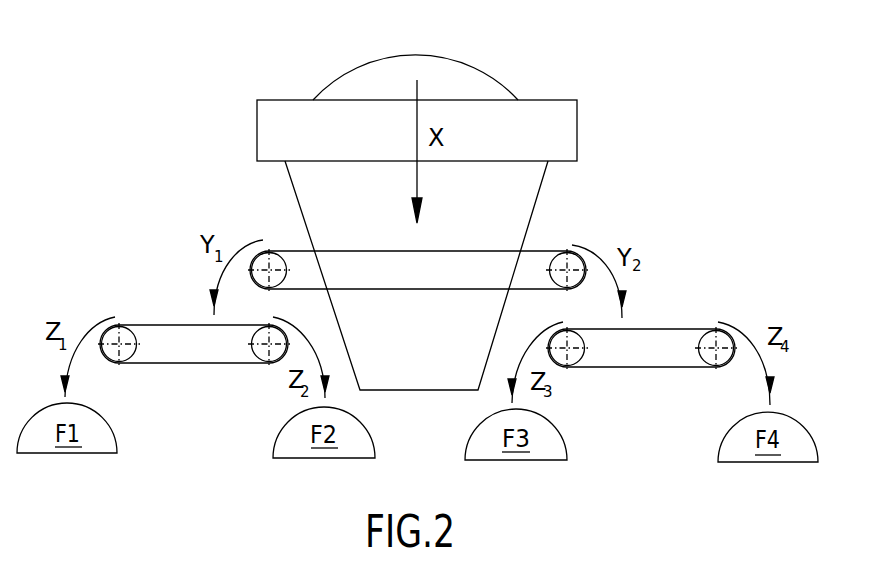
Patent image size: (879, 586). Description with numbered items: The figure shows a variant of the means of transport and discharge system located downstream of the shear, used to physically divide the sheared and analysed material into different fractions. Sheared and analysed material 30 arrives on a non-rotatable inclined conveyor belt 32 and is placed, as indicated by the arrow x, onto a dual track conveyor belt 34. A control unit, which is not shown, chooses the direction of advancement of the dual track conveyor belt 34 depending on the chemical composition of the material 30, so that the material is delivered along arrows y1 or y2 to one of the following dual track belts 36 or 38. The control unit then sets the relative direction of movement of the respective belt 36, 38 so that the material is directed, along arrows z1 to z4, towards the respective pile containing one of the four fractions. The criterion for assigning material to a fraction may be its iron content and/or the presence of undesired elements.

The sheared and analysed material 30 is at (462, 82).
The non-rotatable inclined conveyor belt 32 is at (283, 137).
The dual track conveyor belt 34 is at (533, 262).
The dual track belt 36 is at (175, 330).
The dual track belt 38 is at (645, 347).